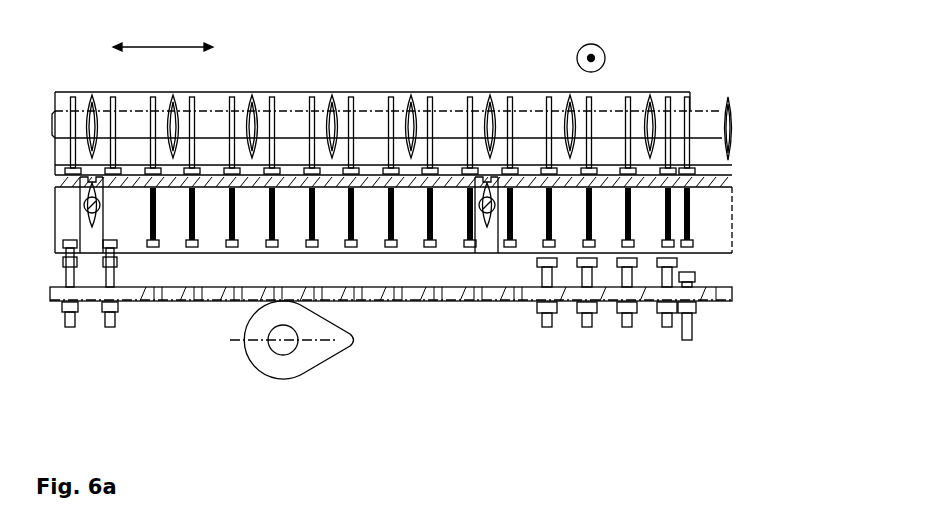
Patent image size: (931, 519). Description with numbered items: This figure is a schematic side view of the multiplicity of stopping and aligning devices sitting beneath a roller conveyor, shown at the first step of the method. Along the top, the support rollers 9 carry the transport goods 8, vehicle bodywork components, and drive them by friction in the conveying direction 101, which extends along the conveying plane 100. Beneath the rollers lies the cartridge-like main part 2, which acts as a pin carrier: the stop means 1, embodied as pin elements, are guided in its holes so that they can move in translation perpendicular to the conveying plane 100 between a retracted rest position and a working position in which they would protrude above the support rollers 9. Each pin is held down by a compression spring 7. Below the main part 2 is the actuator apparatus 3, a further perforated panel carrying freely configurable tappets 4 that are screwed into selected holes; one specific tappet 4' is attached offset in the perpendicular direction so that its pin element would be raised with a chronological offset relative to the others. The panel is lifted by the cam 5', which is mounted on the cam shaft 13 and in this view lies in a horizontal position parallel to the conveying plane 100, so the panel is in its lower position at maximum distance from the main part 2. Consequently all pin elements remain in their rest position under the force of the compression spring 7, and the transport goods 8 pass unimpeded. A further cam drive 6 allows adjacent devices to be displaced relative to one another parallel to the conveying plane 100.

The conveying plane 100 is at (147, 47).
The conveying direction 101 is at (592, 44).
The transport goods 8 is at (680, 98).
The support rollers 9 is at (730, 143).
The specific tappet 4' is at (727, 306).
The actuator apparatus 3 is at (127, 295).
The stop means 1 is at (153, 243).
The compression spring 7 is at (190, 227).
The cam shaft 13 is at (283, 343).
The cam 5' is at (292, 366).
The main part 2 is at (407, 237).
The further cam drive 6 is at (487, 222).
The tappets 4 is at (607, 349).